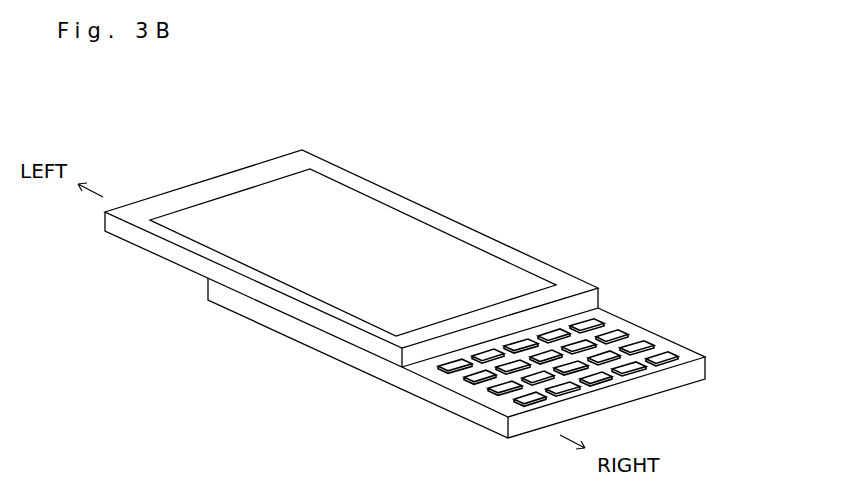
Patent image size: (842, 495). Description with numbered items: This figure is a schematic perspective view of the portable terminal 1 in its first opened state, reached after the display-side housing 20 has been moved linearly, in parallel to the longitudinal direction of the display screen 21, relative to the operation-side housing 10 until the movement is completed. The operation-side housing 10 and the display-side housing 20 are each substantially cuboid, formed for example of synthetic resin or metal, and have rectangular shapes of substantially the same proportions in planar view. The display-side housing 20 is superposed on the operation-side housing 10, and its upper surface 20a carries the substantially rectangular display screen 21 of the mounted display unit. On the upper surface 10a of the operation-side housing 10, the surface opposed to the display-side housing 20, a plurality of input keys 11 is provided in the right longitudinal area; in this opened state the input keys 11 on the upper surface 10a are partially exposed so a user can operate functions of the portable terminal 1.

The portable terminal 1 is at (552, 206).
The operation-side housing 10 is at (705, 369).
The upper surface of the operation-side housing 10a is at (688, 355).
The input keys 11 is at (512, 405).
The display-side housing 20 is at (600, 292).
The upper surface of the display-side housing 20a is at (292, 163).
The display screen 21 is at (371, 210).